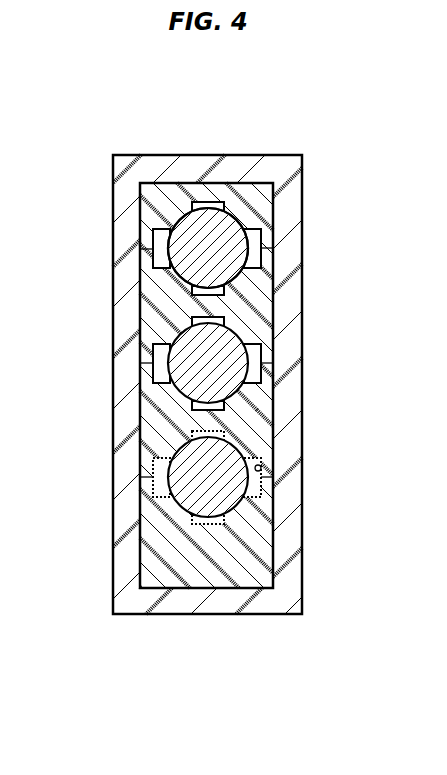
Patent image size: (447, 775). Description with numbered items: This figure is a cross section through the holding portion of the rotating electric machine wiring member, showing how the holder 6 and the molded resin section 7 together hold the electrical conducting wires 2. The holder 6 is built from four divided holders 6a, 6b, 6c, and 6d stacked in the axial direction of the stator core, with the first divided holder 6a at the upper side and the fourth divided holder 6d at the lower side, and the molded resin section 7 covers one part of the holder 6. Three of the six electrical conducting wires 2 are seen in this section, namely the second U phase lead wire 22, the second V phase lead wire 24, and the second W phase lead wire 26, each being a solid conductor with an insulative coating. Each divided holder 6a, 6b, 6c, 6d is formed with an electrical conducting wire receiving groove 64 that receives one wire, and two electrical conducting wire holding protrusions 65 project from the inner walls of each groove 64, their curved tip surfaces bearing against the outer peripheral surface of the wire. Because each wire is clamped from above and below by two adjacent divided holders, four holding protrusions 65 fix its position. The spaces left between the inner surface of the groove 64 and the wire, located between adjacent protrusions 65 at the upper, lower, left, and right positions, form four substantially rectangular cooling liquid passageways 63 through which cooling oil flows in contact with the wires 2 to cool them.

The electrical conducting wire 2 is at (167, 223).
The holder 6 is at (128, 176).
The first divided holder 6a is at (268, 221).
The second divided holder 6b is at (268, 304).
The third divided holder 6c is at (268, 417).
The fourth divided holder 6d is at (270, 521).
The molded resin section 7 is at (150, 156).
The second U phase lead wire 22 is at (183, 472).
The second V phase lead wire 24 is at (180, 242).
The second W phase lead wire 26 is at (182, 360).
The cooling liquid passageway 63 is at (253, 232).
The electrical conducting wire receiving groove 64 is at (261, 467).
The electrical conducting wire holding protrusion 65 is at (173, 450).